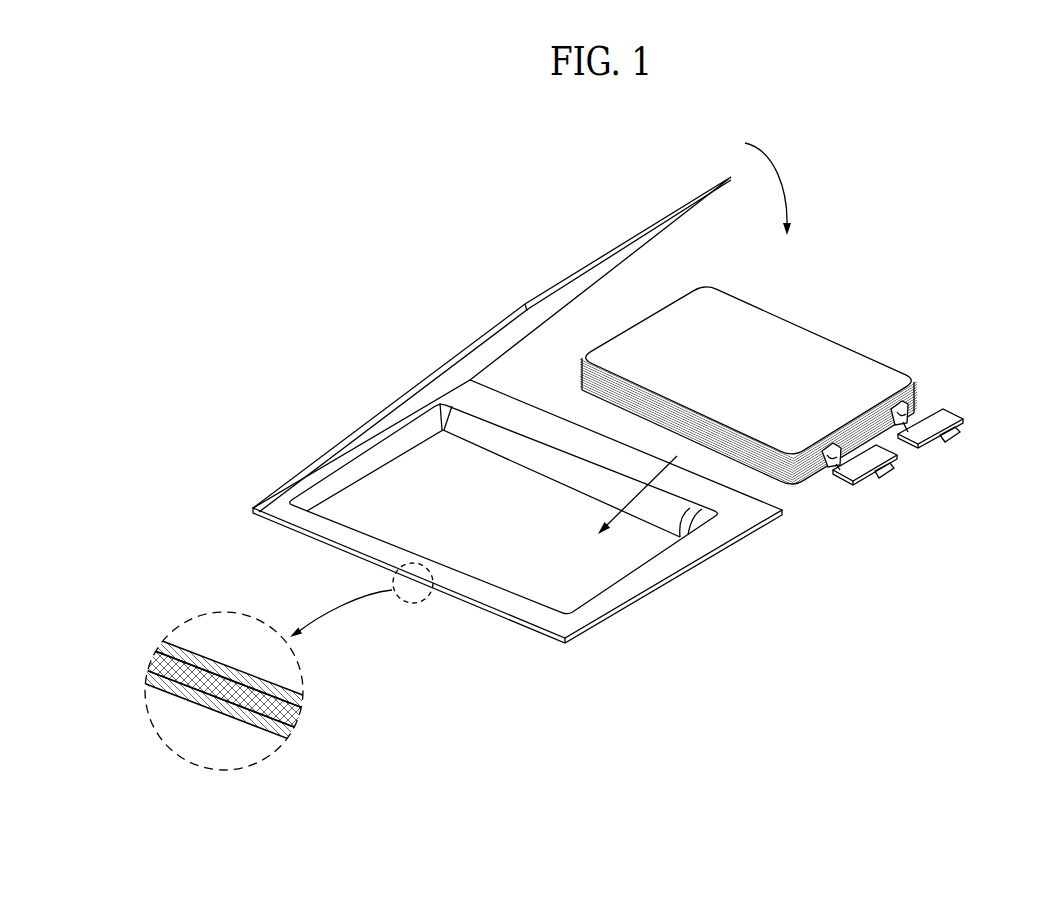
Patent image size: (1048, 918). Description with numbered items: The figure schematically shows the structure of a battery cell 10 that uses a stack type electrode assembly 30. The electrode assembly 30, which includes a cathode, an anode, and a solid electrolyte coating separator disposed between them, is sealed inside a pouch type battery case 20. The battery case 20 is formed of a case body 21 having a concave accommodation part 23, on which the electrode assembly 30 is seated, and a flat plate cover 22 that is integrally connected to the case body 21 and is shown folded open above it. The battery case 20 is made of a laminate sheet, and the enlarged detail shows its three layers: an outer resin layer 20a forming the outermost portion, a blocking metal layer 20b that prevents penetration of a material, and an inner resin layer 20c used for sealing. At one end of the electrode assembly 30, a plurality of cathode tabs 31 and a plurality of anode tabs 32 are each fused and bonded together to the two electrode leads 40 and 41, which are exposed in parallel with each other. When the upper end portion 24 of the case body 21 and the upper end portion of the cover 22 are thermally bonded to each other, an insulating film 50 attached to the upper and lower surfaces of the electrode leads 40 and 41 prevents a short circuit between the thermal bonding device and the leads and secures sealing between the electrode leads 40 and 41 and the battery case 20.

The battery cell 10 is at (299, 191).
The pouch type battery case 20 is at (442, 490).
The case body 21 is at (500, 612).
The flat plate cover 22 is at (573, 273).
The concave accommodation part 23 is at (394, 522).
The upper end portion 24 is at (660, 572).
The outer resin layer 20a is at (264, 727).
The blocking metal layer 20b is at (288, 713).
The inner resin layer 20c is at (277, 690).
The electrode assembly 30 is at (778, 404).
The cathode tabs 31 is at (919, 394).
The anode tabs 32 is at (830, 458).
The electrode lead 40 is at (960, 430).
The electrode lead 41 is at (891, 478).
The insulating film 50 is at (895, 450).